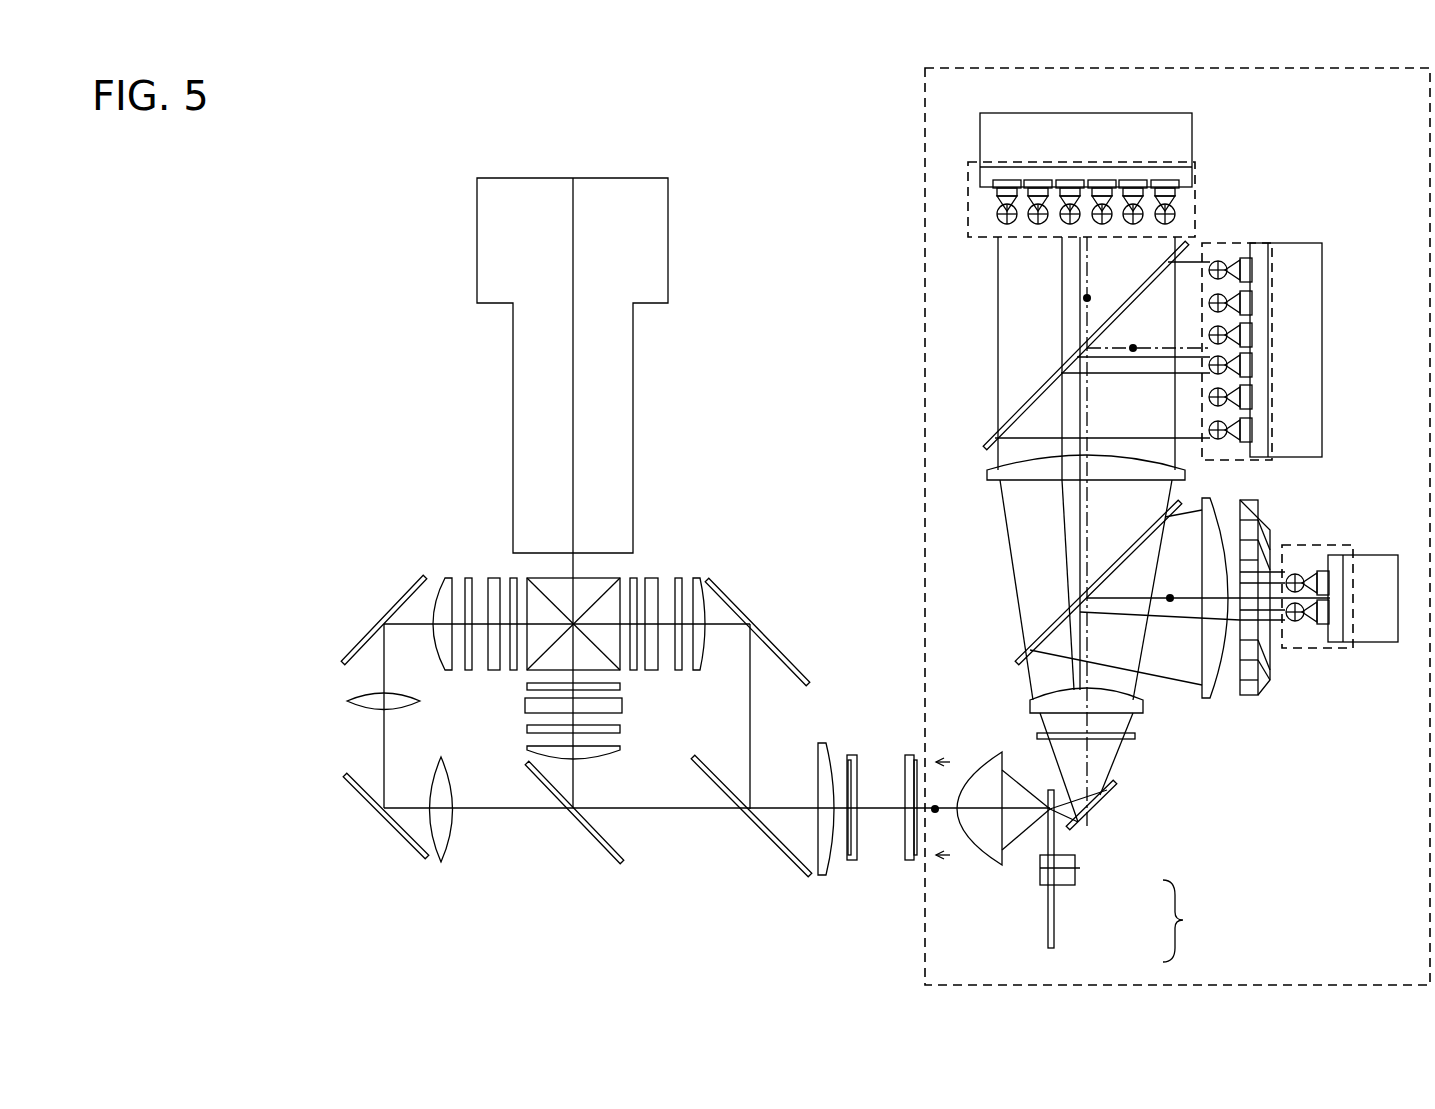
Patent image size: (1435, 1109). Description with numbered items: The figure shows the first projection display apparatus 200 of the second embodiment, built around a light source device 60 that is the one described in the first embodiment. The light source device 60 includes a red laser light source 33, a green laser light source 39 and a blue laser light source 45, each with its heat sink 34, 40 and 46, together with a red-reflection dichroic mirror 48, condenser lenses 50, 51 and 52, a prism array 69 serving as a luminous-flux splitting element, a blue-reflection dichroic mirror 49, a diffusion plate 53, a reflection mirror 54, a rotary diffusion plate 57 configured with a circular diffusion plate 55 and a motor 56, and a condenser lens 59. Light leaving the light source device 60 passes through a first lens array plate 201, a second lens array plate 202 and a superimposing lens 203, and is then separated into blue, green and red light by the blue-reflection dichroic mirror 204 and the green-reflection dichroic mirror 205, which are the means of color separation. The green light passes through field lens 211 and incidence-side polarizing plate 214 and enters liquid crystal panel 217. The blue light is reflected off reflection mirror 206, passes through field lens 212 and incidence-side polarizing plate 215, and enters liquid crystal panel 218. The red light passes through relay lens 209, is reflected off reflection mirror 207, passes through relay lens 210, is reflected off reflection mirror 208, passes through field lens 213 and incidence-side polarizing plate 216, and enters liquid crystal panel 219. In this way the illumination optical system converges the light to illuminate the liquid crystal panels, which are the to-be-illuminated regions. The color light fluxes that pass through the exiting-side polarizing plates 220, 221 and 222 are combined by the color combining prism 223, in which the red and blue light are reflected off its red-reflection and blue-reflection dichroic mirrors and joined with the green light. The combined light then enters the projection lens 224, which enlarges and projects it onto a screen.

The first projection display apparatus 200 is at (312, 225).
The first lens array plate 201 is at (910, 862).
The second lens array plate 202 is at (851, 862).
The superimposing lens 203 is at (830, 870).
The blue-reflection dichroic mirror 204 is at (778, 848).
The green-reflection dichroic mirror 205 is at (607, 852).
The reflection mirror 206 is at (737, 605).
The reflection mirror 207 is at (352, 788).
The reflection mirror 208 is at (349, 650).
The relay lens 209 is at (450, 855).
The relay lens 210 is at (351, 700).
The field lens 211 is at (620, 748).
The field lens 212 is at (703, 672).
The field lens 213 is at (440, 580).
The incidence-side polarizing plate 214 is at (618, 728).
The incidence-side polarizing plate 215 is at (680, 578).
The incidence-side polarizing plate 216 is at (466, 578).
The liquid crystal panel 217 is at (525, 707).
The liquid crystal panel 218 is at (655, 578).
The liquid crystal panel 219 is at (490, 578).
The exiting-side polarizing plate 220 is at (527, 687).
The exiting-side polarizing plate 221 is at (635, 670).
The exiting-side polarizing plate 222 is at (513, 578).
The color combining prism 223 is at (613, 580).
The projection lens 224 is at (513, 344).
The red laser light source 33 is at (1220, 243).
The heat sink 34 is at (1322, 273).
The green laser light source 39 is at (972, 217).
The heat sink 40 is at (1195, 135).
The blue laser light source 45 is at (1297, 545).
The heat sink 46 is at (1368, 562).
The red-reflection dichroic mirror 48 is at (988, 440).
The blue-reflection dichroic mirror 49 is at (1022, 655).
The condenser lens 50 is at (990, 480).
The condenser lens 51 is at (1212, 700).
The condenser lens 52 is at (1030, 712).
The diffusion plate 53 is at (1135, 737).
The reflection mirror 54 is at (1117, 795).
The circular diffusion plate 55 is at (1055, 912).
The motor 56 is at (1080, 877).
The rotary diffusion plate 57 is at (1189, 921).
The condenser lens 59 is at (997, 868).
The light source device 60 is at (928, 130).
The prism array 69 is at (1262, 690).